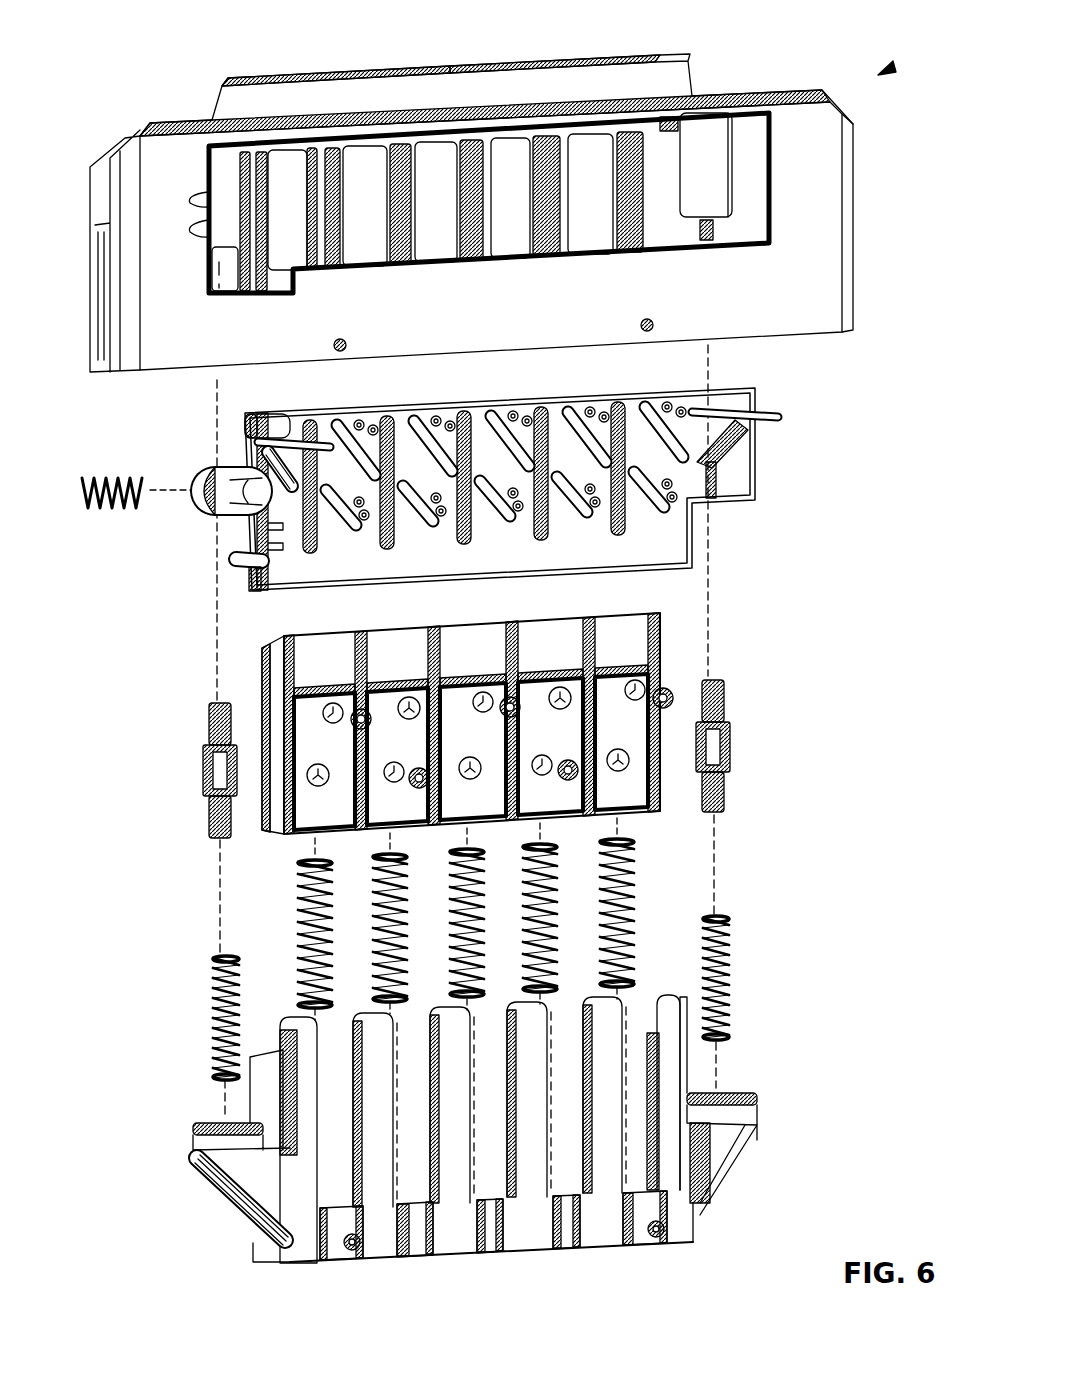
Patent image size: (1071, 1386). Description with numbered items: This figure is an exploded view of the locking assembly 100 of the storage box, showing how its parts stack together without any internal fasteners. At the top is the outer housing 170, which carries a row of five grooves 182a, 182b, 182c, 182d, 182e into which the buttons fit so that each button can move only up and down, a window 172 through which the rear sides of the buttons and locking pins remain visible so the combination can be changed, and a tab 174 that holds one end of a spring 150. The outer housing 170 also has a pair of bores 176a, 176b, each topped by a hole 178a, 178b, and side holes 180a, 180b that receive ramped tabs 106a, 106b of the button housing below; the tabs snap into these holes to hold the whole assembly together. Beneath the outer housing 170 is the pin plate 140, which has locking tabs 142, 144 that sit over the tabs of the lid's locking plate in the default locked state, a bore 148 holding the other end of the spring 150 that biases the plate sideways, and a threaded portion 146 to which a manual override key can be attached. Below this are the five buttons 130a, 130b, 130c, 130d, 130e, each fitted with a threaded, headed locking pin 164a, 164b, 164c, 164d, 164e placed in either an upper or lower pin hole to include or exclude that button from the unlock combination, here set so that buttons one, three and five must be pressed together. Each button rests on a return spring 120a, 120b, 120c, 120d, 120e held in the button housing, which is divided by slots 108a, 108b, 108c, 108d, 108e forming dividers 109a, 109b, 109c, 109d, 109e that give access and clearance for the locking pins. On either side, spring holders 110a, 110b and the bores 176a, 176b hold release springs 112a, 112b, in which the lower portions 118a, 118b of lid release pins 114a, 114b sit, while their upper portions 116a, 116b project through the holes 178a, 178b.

The locking assembly 100 is at (890, 70).
The tab 106a is at (357, 1252).
The tab 106b is at (658, 1240).
The slot 108a is at (355, 1182).
The slot 108b is at (432, 1178).
The slot 108c is at (500, 1175).
The slot 108d is at (578, 1168).
The slot 108e is at (652, 1163).
The divider 109a is at (370, 1057).
The divider 109b is at (448, 1050).
The divider 109c is at (525, 1045).
The divider 109d is at (600, 1040).
The divider 109e is at (670, 1025).
The spring holder 110a is at (213, 1125).
The spring holder 110b is at (742, 1100).
The release spring 112a is at (215, 976).
The release spring 112b is at (732, 956).
The lid release pin 114a is at (204, 770).
The lid release pin 114b is at (732, 746).
The upper portion of lid release pin 116a is at (212, 713).
The upper portion of lid release pin 116b is at (726, 688).
The lower portion of lid release pin 118a is at (212, 830).
The lower portion of lid release pin 118b is at (726, 794).
The spring 120a is at (318, 938).
The spring 120b is at (395, 928).
The spring 120c is at (472, 932).
The spring 120d is at (550, 916).
The spring 120e is at (628, 924).
The button 130a is at (318, 662).
The button 130b is at (398, 656).
The button 130c is at (456, 650).
The button 130d is at (566, 645).
The button 130e is at (622, 640).
The pin plate 140 is at (745, 478).
The locking tab 142 is at (300, 440).
The locking tab 144 is at (760, 416).
The threaded portion 146 is at (240, 560).
The bore 148 is at (205, 478).
The spring 150 is at (98, 478).
The locking pin 164a is at (330, 724).
The locking pin 164b is at (393, 763).
The locking pin 164c is at (483, 692).
The locking pin 164d is at (578, 770).
The locking pin 164e is at (643, 684).
The outer housing 170 is at (855, 272).
The window 172 is at (777, 207).
The tab 174 is at (190, 202).
The bore 176a is at (220, 230).
The bore 176b is at (717, 190).
The hole 178a is at (212, 117).
The hole 178b is at (708, 86).
The hole 180a is at (341, 352).
The hole 180b is at (646, 332).
The groove 182a is at (290, 177).
The groove 182b is at (365, 175).
The groove 182c is at (438, 170).
The groove 182d is at (512, 165).
The groove 182e is at (590, 160).